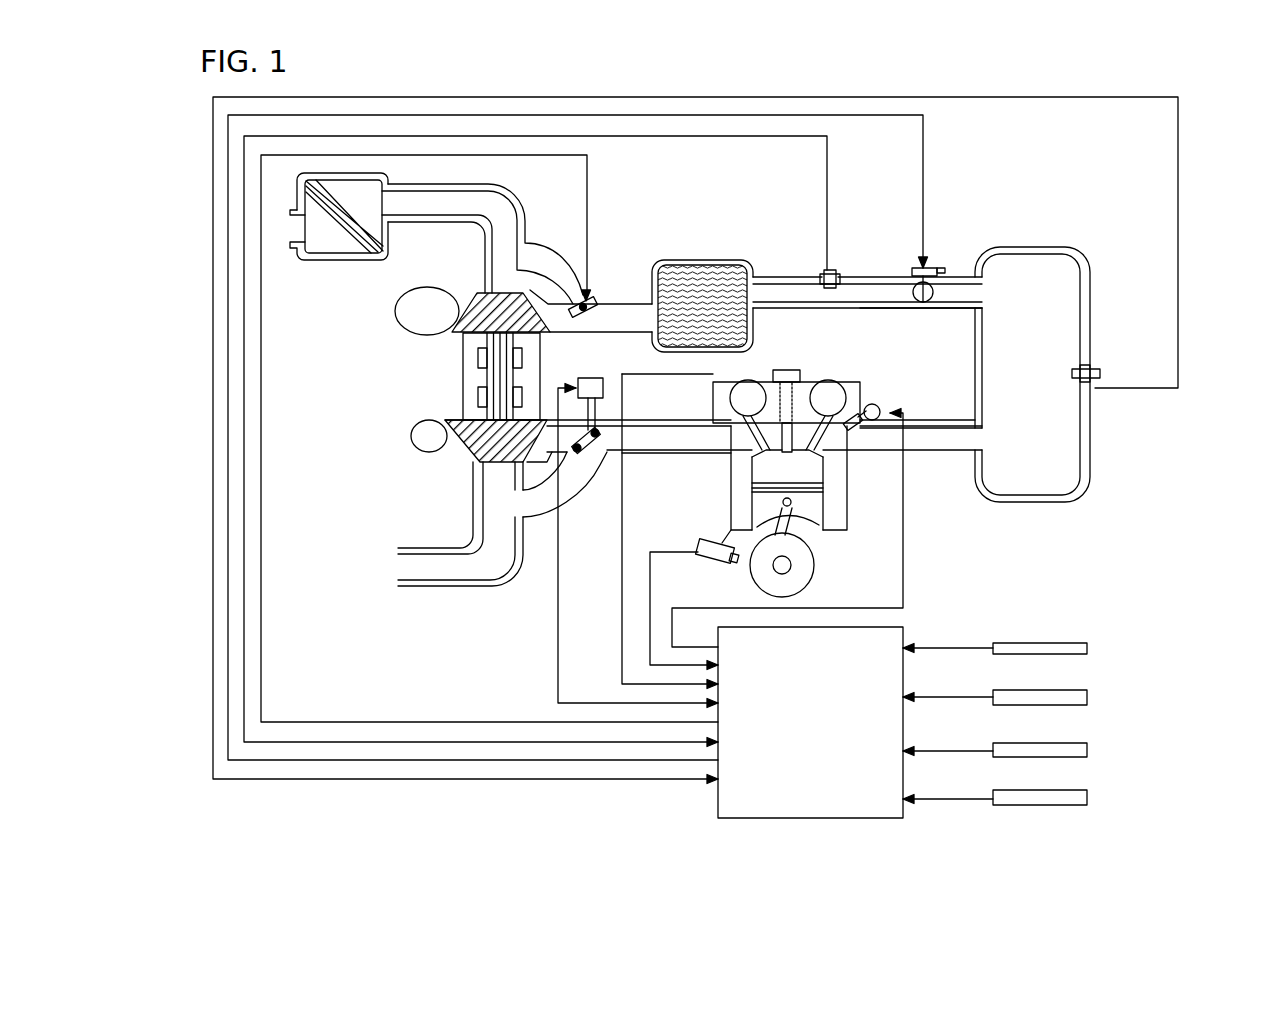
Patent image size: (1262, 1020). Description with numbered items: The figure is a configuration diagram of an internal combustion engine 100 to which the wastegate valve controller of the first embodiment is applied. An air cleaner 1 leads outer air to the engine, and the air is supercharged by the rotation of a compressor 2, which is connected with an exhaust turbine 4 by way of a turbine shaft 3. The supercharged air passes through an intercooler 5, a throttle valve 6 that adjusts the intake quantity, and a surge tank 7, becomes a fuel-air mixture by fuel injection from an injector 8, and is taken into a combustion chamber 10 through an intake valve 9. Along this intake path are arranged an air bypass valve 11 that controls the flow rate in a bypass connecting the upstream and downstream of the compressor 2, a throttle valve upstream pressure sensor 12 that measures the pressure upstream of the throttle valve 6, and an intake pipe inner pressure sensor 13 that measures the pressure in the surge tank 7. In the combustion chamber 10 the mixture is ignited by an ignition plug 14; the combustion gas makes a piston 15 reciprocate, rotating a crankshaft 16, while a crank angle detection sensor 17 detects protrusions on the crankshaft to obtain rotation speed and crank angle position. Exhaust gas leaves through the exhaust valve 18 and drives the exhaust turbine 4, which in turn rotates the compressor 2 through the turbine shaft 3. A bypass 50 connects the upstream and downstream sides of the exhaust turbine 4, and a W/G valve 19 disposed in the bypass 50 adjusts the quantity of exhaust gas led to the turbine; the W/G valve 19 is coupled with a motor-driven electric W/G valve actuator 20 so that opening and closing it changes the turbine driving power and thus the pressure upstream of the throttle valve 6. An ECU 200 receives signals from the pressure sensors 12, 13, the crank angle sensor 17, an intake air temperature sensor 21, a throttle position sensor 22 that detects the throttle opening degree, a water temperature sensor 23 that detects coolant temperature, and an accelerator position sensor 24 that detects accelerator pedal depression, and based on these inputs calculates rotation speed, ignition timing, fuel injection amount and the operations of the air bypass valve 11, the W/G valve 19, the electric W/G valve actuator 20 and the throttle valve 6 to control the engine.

The air cleaner 1 is at (352, 261).
The compressor 2 is at (445, 332).
The turbine shaft 3 is at (483, 377).
The exhaust turbine 4 is at (467, 440).
The intercooler 5 is at (704, 268).
The throttle valve 6 is at (913, 282).
The surge tank 7 is at (1045, 260).
The injector 8 is at (885, 410).
The intake valve 9 is at (830, 456).
The combustion chamber 10 is at (760, 468).
The air bypass valve 11 is at (588, 318).
The throttle valve upstream pressure sensor 12 is at (822, 272).
The intake pipe inner pressure sensor 13 is at (1105, 388).
The ignition plug 14 is at (802, 392).
The piston 15 is at (824, 503).
The crankshaft 16 is at (813, 580).
The crank angle detection sensor 17 is at (703, 541).
The exhaust valve 18 is at (748, 452).
The W/G valve 19 is at (583, 455).
The electric W/G valve actuator 20 is at (590, 380).
The intake air temperature sensor 21 is at (1087, 650).
The throttle position sensor 22 is at (1087, 698).
The water temperature sensor 23 is at (1087, 751).
The accelerator position sensor 24 is at (1087, 800).
The bypass 50 is at (545, 520).
The internal combustion engine 100 is at (1192, 293).
The ECU 200 is at (890, 636).